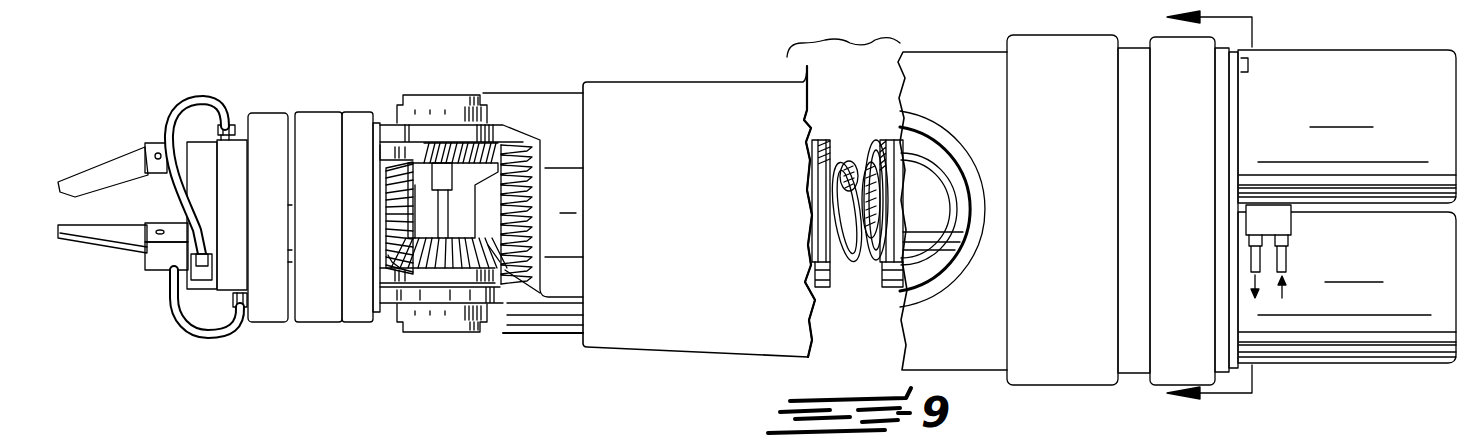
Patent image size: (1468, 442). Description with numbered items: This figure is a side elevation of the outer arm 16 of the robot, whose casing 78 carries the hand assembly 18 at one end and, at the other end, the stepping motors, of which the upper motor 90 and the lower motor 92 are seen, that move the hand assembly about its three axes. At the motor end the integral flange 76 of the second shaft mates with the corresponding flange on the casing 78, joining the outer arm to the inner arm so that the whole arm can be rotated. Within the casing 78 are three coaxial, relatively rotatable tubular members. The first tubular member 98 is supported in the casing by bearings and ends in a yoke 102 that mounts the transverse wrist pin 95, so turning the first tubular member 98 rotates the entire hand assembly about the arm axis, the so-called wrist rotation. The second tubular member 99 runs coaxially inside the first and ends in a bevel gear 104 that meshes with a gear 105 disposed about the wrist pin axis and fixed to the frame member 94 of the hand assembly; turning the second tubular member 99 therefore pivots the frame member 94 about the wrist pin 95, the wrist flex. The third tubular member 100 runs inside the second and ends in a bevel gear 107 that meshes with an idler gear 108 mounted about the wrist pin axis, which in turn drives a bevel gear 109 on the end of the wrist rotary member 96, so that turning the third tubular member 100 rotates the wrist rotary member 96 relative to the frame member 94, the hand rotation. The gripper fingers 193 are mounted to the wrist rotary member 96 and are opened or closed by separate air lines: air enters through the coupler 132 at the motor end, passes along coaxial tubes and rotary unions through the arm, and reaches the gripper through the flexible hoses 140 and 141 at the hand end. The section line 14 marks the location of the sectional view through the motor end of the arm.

The section line of FIG. 14 is at (1237, 208).
The outer arm 16 is at (848, 29).
The hand assembly 18 is at (243, 100).
The integral flange 76 is at (977, 150).
The casing 78 is at (719, 190).
The stepping motor 90 is at (1427, 102).
The stepping motor 92 is at (1431, 264).
The frame member 94 is at (356, 117).
The transverse wrist pin 95 is at (441, 207).
The wrist rotary member 96 is at (264, 322).
The first tubular member 98 is at (805, 243).
The second tubular member 99 is at (827, 212).
The third tubular member 100 is at (840, 187).
The yoke 102 is at (428, 110).
The bevel gear 104 is at (545, 168).
The gear 105 is at (515, 140).
The bevel gear 107 is at (497, 255).
The idler gear 108 is at (397, 262).
The bevel gear 109 is at (392, 210).
The coupler 132 is at (1293, 223).
The flexible hose 140 is at (187, 100).
The flexible hose 141 is at (180, 305).
The gripper jaws 193 is at (114, 160).